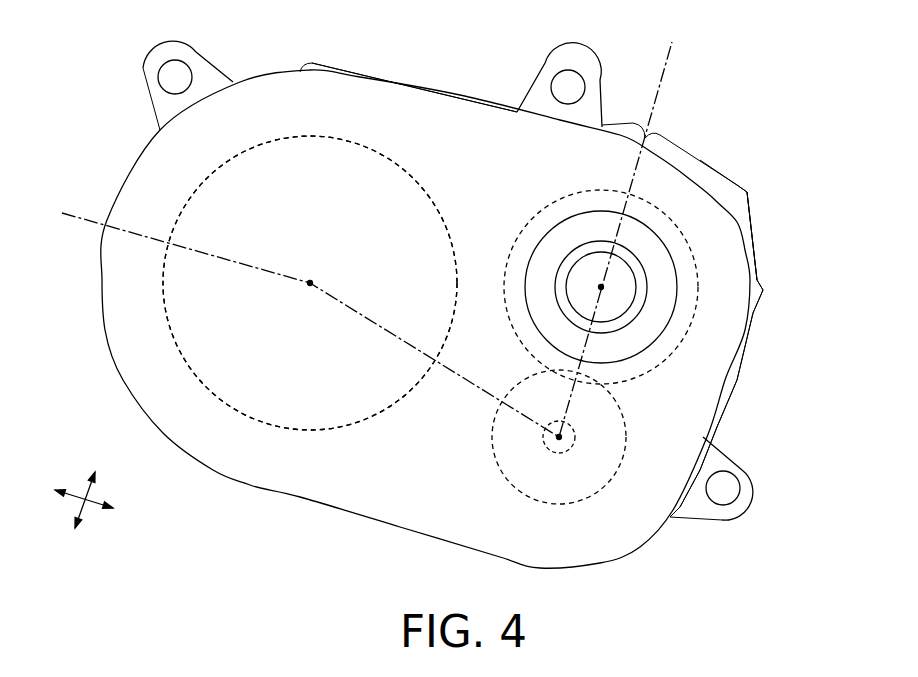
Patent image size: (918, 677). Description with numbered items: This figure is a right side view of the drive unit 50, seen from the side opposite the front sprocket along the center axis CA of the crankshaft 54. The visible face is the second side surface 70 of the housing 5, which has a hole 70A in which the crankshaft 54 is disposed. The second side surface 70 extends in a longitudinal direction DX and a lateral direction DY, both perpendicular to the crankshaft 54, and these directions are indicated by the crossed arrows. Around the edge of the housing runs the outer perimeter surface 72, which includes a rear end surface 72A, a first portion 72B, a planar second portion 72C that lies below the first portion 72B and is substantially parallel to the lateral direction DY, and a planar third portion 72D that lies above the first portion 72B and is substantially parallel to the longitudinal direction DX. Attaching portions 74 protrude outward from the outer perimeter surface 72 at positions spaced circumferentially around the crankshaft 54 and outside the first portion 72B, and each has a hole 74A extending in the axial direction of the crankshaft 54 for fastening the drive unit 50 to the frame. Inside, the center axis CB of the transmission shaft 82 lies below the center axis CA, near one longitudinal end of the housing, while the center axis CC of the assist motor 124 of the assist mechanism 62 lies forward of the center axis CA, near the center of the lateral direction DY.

The drive unit 50 is at (733, 95).
The crankshaft 54 is at (645, 270).
The assist mechanism 62 is at (277, 136).
The second side surface 70 is at (290, 73).
The hole 70A is at (580, 216).
The outer perimeter surface 72 is at (240, 82).
The rear end surface 72A is at (767, 155).
The first portion 72B is at (747, 192).
The second portion 72C is at (727, 405).
The third portion 72D is at (495, 106).
The attaching portions 74 is at (158, 52).
The hole 74A is at (159, 79).
The transmission shaft 82 is at (559, 503).
The assist motor 124 is at (431, 196).
The housing 5 is at (72, 208).
The center axis CA is at (604, 289).
The center axis CB is at (562, 437).
The center axis CC is at (310, 280).
The longitudinal direction DX is at (95, 507).
The lateral direction DY is at (95, 489).